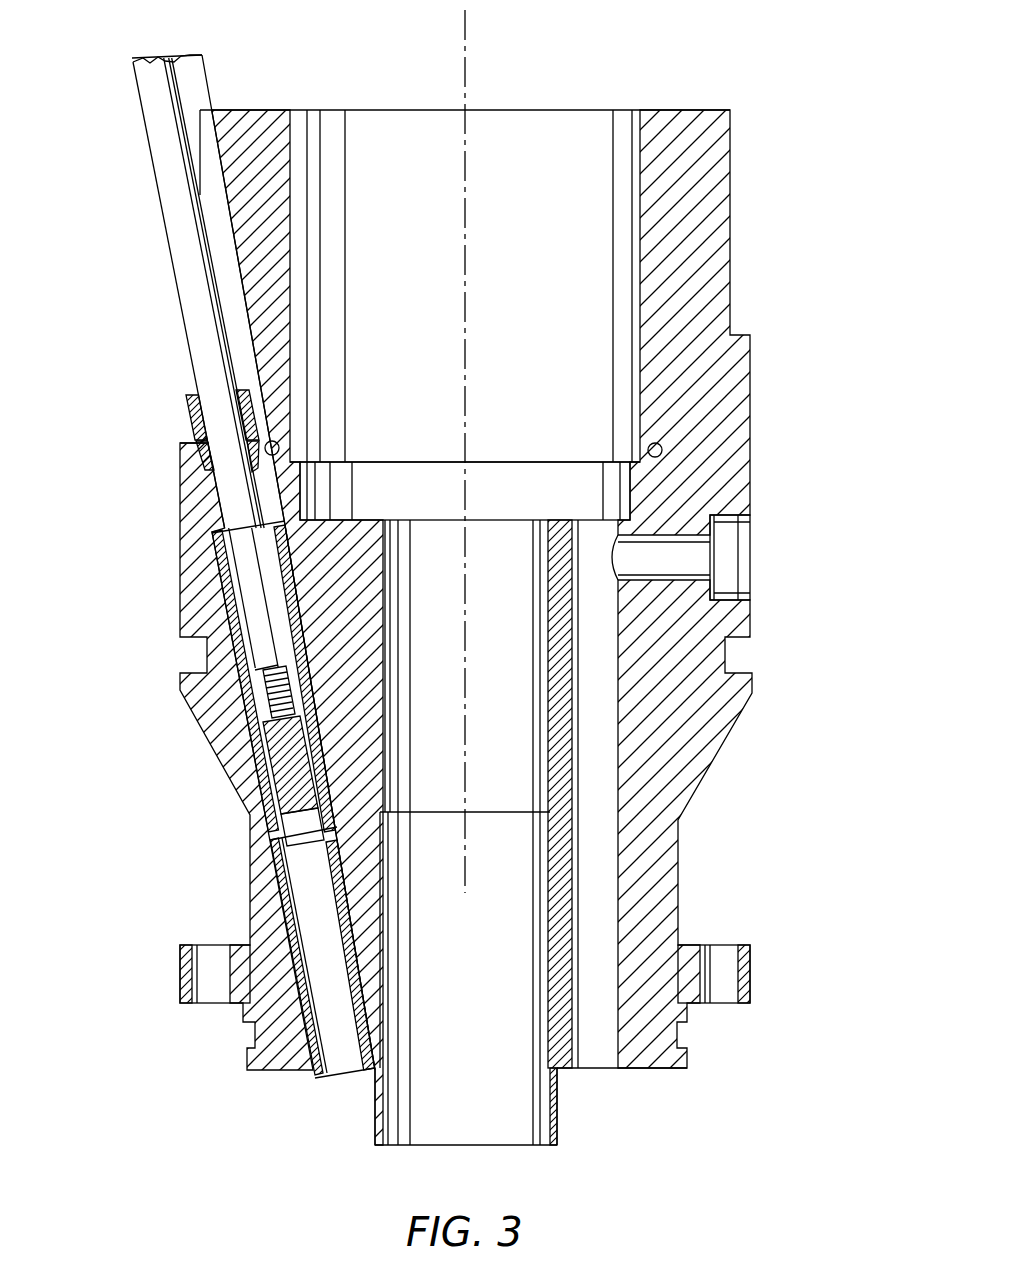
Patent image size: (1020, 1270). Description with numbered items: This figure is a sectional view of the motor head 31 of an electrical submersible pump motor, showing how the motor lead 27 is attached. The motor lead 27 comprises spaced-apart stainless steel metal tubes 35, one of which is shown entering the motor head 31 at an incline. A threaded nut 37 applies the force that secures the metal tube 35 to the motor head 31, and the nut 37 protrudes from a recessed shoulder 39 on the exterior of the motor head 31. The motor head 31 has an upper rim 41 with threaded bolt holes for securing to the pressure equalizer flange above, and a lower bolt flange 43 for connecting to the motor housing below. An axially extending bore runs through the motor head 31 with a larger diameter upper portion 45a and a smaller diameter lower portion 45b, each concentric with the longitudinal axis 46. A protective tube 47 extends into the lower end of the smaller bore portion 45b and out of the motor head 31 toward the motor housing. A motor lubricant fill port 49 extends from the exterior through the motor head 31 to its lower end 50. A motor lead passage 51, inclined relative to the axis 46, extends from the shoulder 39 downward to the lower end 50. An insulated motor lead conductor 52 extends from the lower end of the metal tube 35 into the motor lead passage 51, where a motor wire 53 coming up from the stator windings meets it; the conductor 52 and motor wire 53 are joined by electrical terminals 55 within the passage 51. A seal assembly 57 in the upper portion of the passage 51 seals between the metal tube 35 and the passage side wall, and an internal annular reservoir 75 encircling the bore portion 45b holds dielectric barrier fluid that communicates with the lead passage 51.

The motor lead 27 is at (208, 40).
The motor head 31 is at (733, 198).
The metal tube 35 is at (168, 202).
The threaded nut 37 is at (190, 398).
The shoulder 39 is at (198, 438).
The upper rim 41 is at (258, 108).
The lower bolt flange 43 is at (752, 966).
The bore upper portion 45a is at (637, 135).
The bore lower portion 45b is at (536, 725).
The longitudinal axis 46 is at (468, 22).
The protective tube 47 is at (375, 1122).
The motor lubricant fill port 49 is at (720, 568).
The lower end 50 is at (652, 1070).
The motor lead passage 51 is at (214, 600).
The insulated motor lead conductor 52 is at (258, 640).
The motor wire 53 is at (328, 1008).
The electrical terminals 55 is at (262, 772).
The seal assembly 57 is at (196, 458).
The internal annular reservoir 75 is at (663, 451).